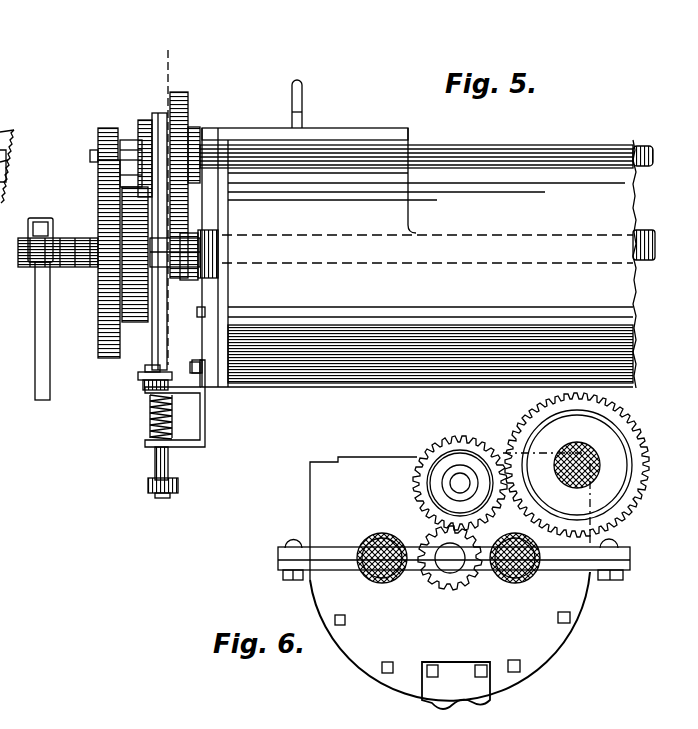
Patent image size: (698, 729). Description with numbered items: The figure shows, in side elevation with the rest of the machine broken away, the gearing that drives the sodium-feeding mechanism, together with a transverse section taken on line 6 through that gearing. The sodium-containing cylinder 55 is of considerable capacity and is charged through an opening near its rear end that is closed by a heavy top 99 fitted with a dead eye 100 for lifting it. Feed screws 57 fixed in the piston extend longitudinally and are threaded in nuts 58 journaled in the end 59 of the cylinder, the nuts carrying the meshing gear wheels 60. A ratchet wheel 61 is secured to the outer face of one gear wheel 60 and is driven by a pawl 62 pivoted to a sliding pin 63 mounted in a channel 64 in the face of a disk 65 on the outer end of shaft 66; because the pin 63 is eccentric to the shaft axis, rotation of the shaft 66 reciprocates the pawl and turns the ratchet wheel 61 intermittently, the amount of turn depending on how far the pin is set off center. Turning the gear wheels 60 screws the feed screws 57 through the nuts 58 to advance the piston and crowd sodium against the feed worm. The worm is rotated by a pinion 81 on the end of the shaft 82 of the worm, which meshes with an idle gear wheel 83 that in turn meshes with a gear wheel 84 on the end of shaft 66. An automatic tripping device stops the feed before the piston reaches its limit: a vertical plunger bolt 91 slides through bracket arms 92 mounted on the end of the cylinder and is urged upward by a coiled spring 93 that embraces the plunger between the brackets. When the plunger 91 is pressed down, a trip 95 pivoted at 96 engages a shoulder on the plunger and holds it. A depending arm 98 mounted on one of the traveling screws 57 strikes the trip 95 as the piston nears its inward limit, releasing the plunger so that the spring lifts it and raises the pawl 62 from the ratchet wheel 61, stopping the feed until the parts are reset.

In FIG. 5, the section line 6- 6 is at (174, 201).
In FIG. 5, the sodium-containing cylinder 55 is at (535, 185).
In FIG. 5, the feed screws 57 is at (68, 238).
In FIG. 6, the feed screws 57 is at (383, 578).
In FIG. 5, the nuts 58 is at (218, 250).
In FIG. 6, the nuts 58 is at (368, 541).
In FIG. 5, the end of the cylinder 59 is at (212, 293).
In FIG. 6, the end of the cylinder 59 is at (360, 465).
In FIG. 5, the gear wheels 60 is at (137, 322).
In FIG. 5, the ratchet wheel 61 is at (98, 340).
In FIG. 5, the pawl 62 is at (108, 128).
In FIG. 5, the sliding pin 63 is at (127, 157).
In FIG. 5, the channel 64 is at (6, 155).
In FIG. 5, the disk 65 is at (147, 120).
In FIG. 5, the shaft 66 is at (460, 150).
In FIG. 6, the shaft 66 is at (600, 468).
In FIG. 5, the pinion 81 is at (200, 226).
In FIG. 6, the pinion 81 is at (440, 577).
In FIG. 6, the shaft of the worm 82 is at (455, 574).
In FIG. 5, the idle gear wheel 83 is at (196, 130).
In FIG. 6, the idle gear wheel 83 is at (466, 445).
In FIG. 5, the gear wheel 84 is at (186, 93).
In FIG. 6, the gear wheel 84 is at (611, 413).
In FIG. 5, the plunger bolt 91 is at (158, 303).
In FIG. 5, the bracket arms 92 is at (191, 428).
In FIG. 5, the coiled spring 93 is at (160, 425).
In FIG. 5, the trip 95 is at (150, 381).
In FIG. 5, the pivot of the trip 96 is at (140, 371).
In FIG. 5, the depending arm 98 is at (36, 330).
In FIG. 5, the top 99 is at (330, 128).
In FIG. 5, the dead eye 100 is at (297, 80).